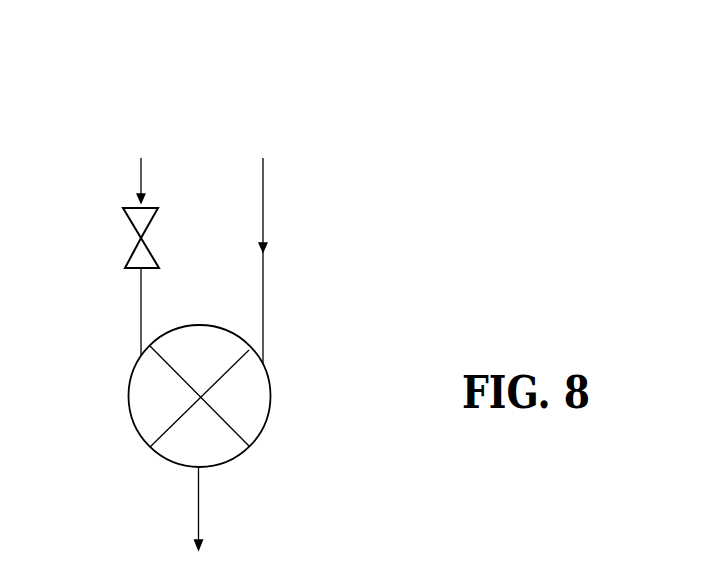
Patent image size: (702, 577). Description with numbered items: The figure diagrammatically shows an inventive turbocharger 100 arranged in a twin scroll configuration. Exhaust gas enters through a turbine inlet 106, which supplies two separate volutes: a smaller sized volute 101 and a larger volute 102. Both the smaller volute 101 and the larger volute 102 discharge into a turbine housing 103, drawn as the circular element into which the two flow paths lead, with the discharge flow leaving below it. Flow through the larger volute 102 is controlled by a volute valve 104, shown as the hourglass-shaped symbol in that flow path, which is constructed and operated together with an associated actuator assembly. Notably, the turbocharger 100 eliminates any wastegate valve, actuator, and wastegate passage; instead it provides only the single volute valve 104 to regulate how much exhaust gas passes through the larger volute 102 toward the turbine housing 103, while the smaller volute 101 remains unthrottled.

The turbocharger 100 is at (210, 170).
The smaller sized volute 101 is at (264, 333).
The larger volute 102 is at (141, 330).
The turbine housing 103 is at (271, 415).
The volute valve 104 is at (127, 220).
The turbine inlet 106 is at (141, 180).